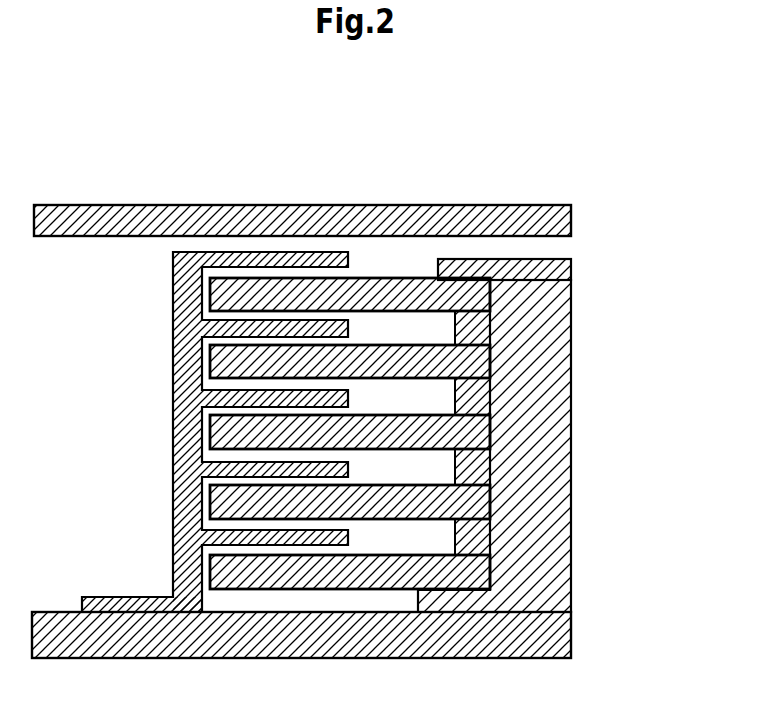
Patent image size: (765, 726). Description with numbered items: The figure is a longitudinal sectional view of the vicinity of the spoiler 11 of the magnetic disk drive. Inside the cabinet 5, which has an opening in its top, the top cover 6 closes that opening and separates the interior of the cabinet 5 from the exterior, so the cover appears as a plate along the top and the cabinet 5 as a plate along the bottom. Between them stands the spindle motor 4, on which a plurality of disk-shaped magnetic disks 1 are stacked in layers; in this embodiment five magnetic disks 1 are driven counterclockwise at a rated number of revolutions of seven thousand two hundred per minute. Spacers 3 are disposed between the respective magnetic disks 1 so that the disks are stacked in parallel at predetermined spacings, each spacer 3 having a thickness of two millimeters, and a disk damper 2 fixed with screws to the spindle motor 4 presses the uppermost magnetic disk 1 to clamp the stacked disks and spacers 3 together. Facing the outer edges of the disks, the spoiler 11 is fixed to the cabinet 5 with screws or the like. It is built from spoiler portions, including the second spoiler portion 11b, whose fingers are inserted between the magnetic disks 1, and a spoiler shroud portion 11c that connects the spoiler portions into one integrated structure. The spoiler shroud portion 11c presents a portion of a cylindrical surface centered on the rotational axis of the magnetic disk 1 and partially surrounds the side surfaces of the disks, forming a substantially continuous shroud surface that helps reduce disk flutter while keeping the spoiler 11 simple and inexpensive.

The magnetic disk 1 is at (211, 307).
The disk damper 2 is at (568, 262).
The spacer 3 is at (457, 327).
The spindle motor 4 is at (537, 425).
The cabinet 5 is at (553, 637).
The top cover 6 is at (436, 206).
The spoiler 11 is at (205, 361).
The second spoiler portion 11b is at (298, 261).
The spoiler shroud portion 11c is at (176, 292).